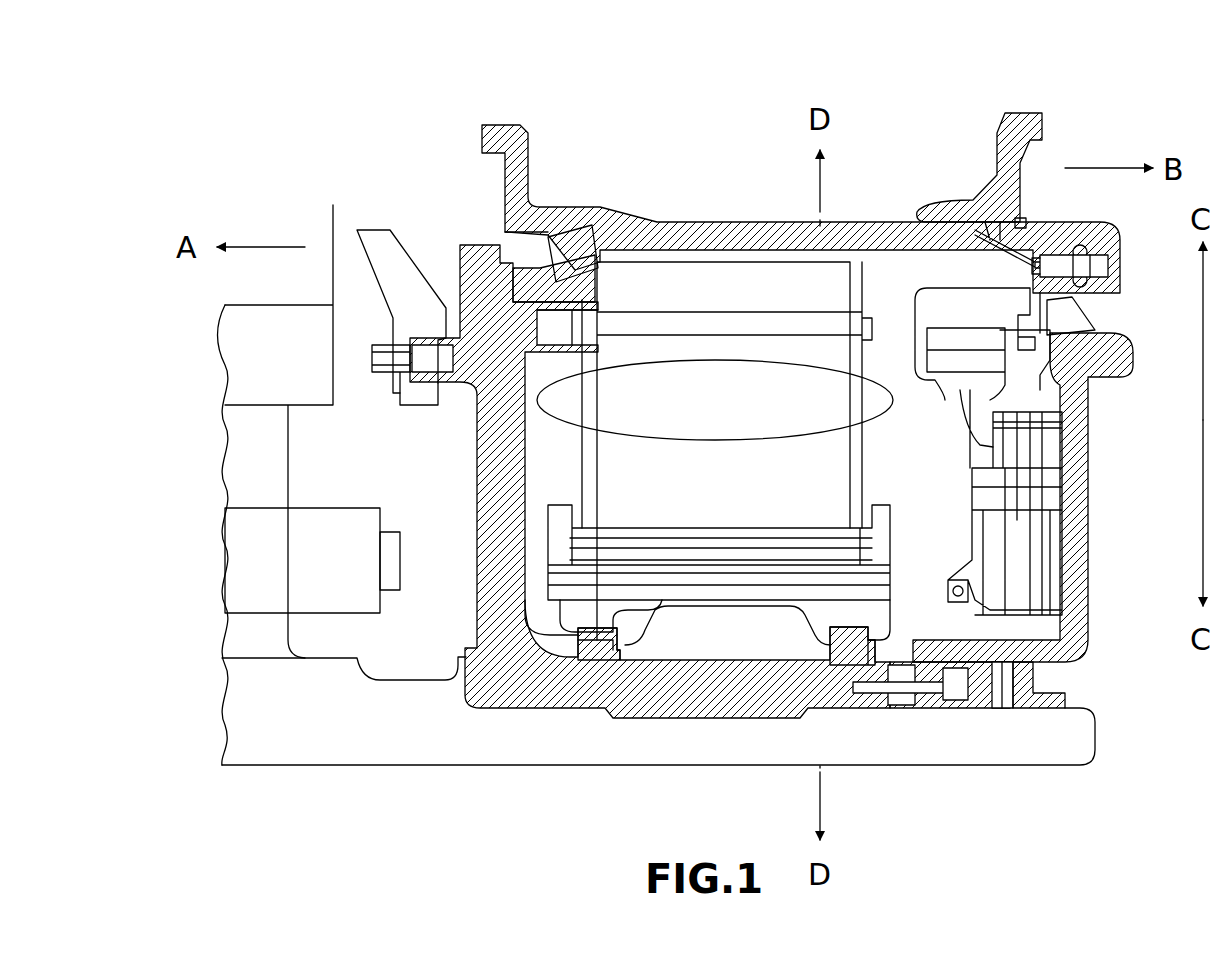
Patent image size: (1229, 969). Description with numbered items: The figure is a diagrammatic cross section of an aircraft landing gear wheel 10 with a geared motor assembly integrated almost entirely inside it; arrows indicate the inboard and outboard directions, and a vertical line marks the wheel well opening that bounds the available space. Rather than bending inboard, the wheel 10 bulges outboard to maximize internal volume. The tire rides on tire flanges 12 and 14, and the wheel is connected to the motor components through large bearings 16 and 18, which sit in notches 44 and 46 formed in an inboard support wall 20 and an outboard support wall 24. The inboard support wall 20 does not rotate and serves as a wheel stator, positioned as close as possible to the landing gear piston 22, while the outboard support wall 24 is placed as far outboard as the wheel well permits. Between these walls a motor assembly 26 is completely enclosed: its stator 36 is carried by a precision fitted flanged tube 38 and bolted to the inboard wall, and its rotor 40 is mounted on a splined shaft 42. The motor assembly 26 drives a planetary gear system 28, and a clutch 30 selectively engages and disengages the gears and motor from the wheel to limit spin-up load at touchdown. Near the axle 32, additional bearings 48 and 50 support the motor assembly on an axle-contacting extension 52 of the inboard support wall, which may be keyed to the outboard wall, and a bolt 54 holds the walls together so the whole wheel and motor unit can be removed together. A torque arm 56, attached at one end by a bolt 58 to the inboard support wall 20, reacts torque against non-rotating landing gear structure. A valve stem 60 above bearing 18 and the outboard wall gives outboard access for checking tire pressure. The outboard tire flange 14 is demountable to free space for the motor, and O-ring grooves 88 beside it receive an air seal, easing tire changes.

The wheel 10 is at (652, 130).
The tire flange 12 is at (492, 136).
The tire flange 14 is at (1020, 122).
The bearing 16 is at (565, 256).
The bearing 18 is at (1070, 306).
The inboard support wall 20 is at (496, 478).
The landing gear piston 22 is at (272, 477).
The outboard support wall 24 is at (1075, 562).
The motor assembly 26 is at (873, 280).
The gear system 28 is at (1052, 458).
The clutch 30 is at (940, 325).
The axle 32 is at (410, 734).
The stator 36 is at (703, 372).
The flanged tube 38 is at (648, 322).
The rotor 40 is at (558, 522).
The splined shaft 42 is at (676, 578).
The notch 44 is at (548, 262).
The notch 46 is at (1088, 322).
The bearing 48 is at (592, 650).
The bearing 50 is at (843, 665).
The axle-contacting extension 52 is at (729, 693).
The bolt 54 is at (957, 686).
The torque arm 56 is at (383, 240).
The bolt 58 is at (380, 383).
The valve stem 60 is at (1120, 262).
The O-ring grooves 88 is at (1008, 252).